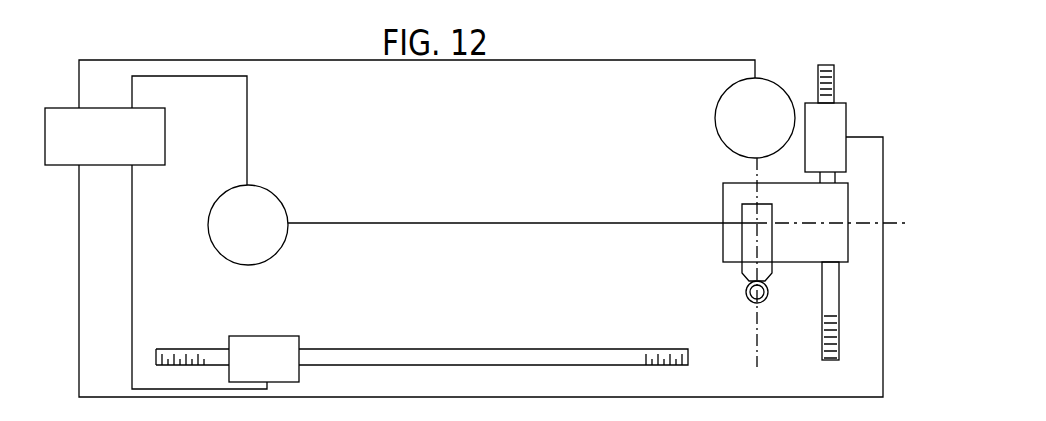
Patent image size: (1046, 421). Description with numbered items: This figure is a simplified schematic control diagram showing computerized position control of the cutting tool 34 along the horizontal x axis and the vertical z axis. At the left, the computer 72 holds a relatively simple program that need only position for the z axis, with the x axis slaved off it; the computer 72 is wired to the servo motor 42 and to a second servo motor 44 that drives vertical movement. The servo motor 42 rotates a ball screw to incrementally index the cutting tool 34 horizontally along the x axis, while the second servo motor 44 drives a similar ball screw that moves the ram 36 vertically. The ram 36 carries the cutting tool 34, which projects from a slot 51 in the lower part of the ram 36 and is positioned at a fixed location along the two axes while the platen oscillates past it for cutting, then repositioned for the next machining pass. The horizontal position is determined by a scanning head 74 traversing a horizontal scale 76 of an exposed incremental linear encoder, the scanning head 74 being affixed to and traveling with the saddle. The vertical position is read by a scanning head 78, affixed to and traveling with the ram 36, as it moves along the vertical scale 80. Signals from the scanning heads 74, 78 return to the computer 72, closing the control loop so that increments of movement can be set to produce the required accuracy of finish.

The computer 72 is at (165, 143).
The servo motor 42 is at (282, 201).
The motor 44 is at (716, 126).
The scale 80 is at (834, 70).
The scanning head 78 is at (838, 122).
The ram 36 is at (723, 198).
The probe holder slot 51 is at (742, 270).
The cutting tool 34 is at (746, 293).
The horizontal scale 76 is at (502, 349).
The scanning head 74 is at (262, 336).